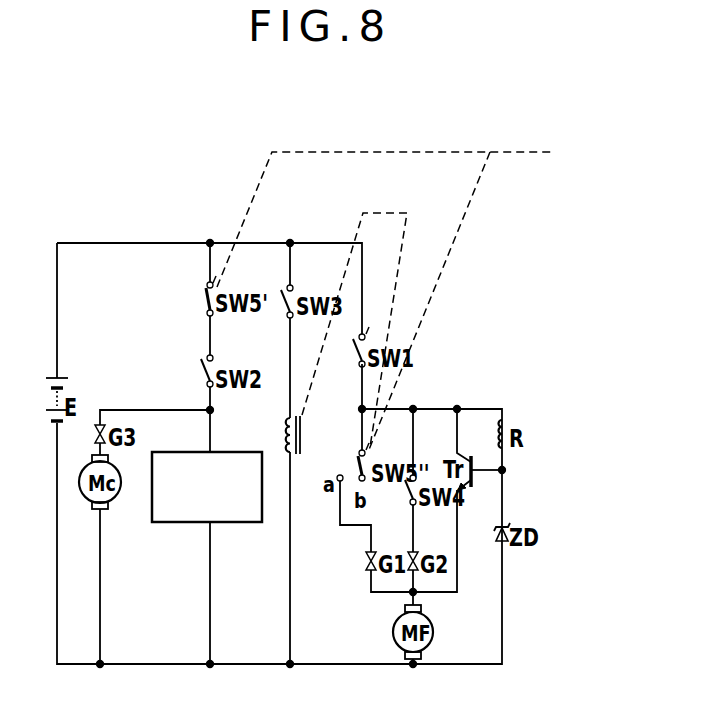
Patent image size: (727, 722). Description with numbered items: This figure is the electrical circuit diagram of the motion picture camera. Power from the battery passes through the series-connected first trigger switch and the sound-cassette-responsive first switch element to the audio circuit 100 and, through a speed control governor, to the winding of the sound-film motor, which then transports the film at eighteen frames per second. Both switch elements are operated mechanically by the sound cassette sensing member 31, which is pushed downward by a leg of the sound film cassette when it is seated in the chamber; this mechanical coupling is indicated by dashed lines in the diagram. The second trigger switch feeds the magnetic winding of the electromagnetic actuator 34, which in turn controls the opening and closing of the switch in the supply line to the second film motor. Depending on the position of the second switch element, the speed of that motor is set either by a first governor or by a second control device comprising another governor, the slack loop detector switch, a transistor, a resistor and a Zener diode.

The sound cassette sensing member 31 is at (578, 165).
The electromagnetic actuator 34 is at (309, 435).
The audio circuit 100 is at (247, 519).